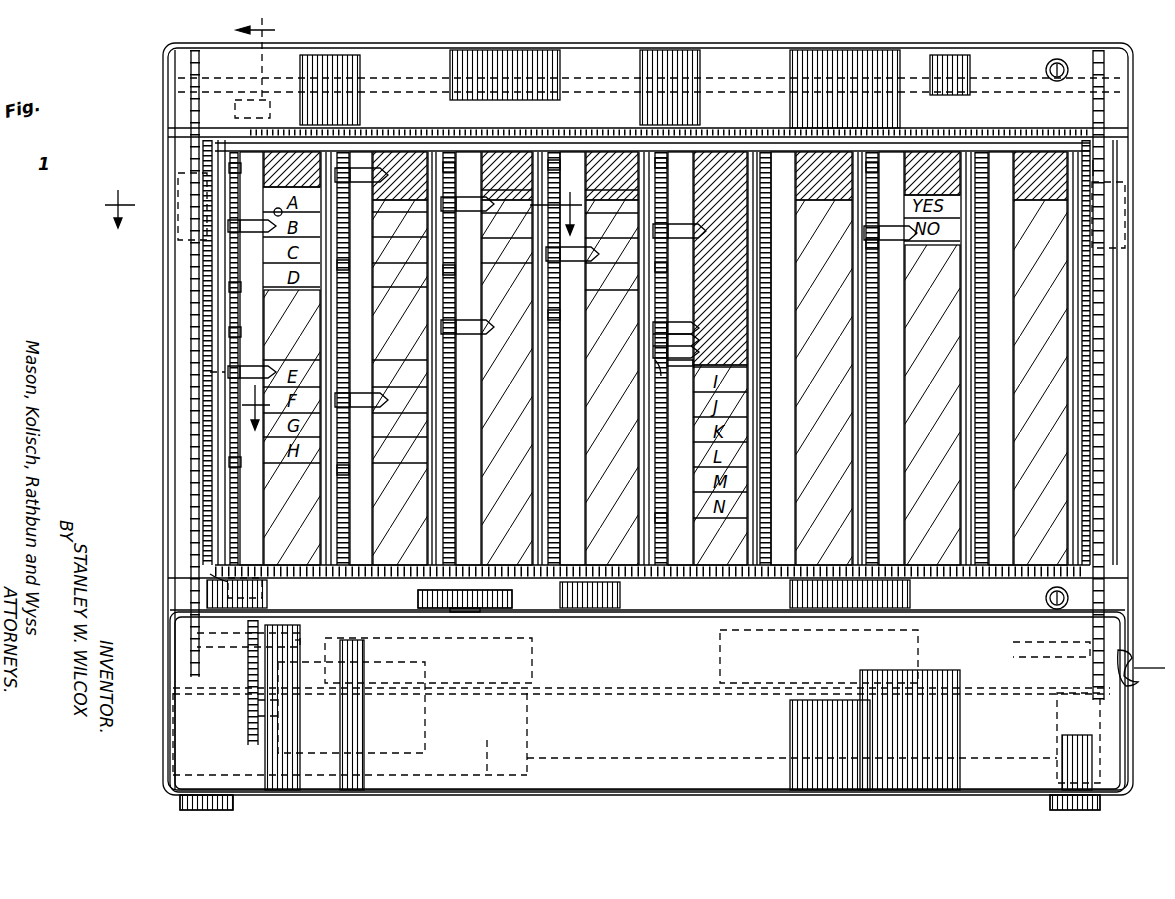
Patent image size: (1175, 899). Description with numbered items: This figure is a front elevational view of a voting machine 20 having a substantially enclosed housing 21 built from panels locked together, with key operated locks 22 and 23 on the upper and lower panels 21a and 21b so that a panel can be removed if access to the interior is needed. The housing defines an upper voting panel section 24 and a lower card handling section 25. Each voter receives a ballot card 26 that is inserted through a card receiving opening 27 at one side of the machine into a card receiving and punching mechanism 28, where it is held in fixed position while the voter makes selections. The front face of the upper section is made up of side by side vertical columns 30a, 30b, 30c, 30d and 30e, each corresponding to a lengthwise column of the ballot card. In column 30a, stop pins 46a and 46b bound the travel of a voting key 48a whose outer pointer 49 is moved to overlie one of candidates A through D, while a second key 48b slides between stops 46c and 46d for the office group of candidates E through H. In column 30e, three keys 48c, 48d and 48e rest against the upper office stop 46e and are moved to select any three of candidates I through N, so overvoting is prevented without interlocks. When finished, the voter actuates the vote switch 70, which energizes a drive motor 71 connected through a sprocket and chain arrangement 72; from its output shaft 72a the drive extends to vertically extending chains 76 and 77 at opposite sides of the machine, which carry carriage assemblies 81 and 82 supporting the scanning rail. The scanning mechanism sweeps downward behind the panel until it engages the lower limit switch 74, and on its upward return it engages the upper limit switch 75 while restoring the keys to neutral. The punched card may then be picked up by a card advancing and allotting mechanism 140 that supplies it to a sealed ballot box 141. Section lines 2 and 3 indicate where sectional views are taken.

The voting machine 20 is at (163, 66).
The housing 21 is at (178, 311).
The upper panel 21a is at (922, 66).
The lower panel 21b is at (803, 578).
The key operated lock 22 is at (1067, 68).
The key operated lock 23 is at (1068, 596).
The voting panel section 24 is at (1122, 296).
The card handling section 25 is at (160, 622).
The ballot card 26 is at (1140, 668).
The card receiving opening 27 is at (1130, 660).
The card receiving and punching mechanism 28 is at (715, 652).
The column 30a is at (300, 152).
The column 30b is at (403, 150).
The column 30c is at (505, 150).
The column 30d is at (612, 150).
The column 30e is at (718, 150).
The stop pin 46a is at (230, 168).
The stop pin 46b is at (230, 287).
The stop 46c is at (230, 332).
The stop 46d is at (230, 462).
The office stop 46e is at (653, 340).
The voting key 48a is at (232, 228).
The voting key 48b is at (230, 372).
The voting key 48c is at (692, 326).
The voting key 48d is at (698, 346).
The voting key 48e is at (660, 385).
The pointer 49 is at (281, 208).
The vote switch 70 is at (512, 598).
The drive motor 71 is at (345, 791).
The sprocket and chain arrangement 72 is at (246, 713).
The output shaft 72a is at (228, 648).
The limit switch 74 is at (262, 588).
The upper limit switch 75 is at (258, 100).
The chain 76 is at (228, 380).
The chain 77 is at (1108, 170).
The carriage assembly 81 is at (178, 180).
The carriage assembly 82 is at (1125, 203).
The card advancing and allotting mechanism 140 is at (533, 660).
The sealed ballot box 141 is at (487, 775).
The section line 2- 2 is at (336, 215).
The section line 3- 3 is at (240, 231).